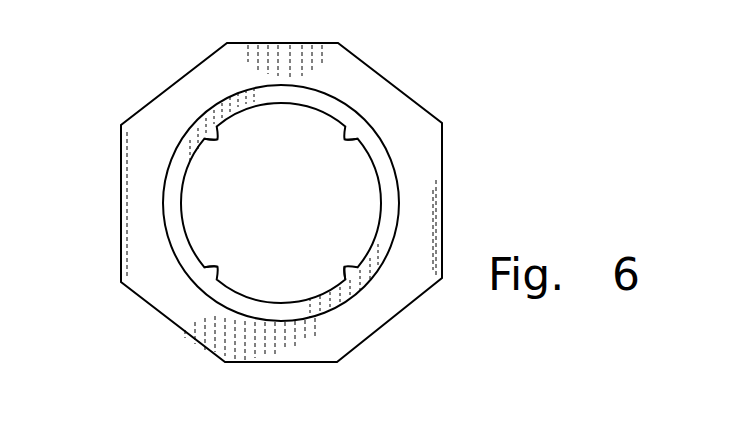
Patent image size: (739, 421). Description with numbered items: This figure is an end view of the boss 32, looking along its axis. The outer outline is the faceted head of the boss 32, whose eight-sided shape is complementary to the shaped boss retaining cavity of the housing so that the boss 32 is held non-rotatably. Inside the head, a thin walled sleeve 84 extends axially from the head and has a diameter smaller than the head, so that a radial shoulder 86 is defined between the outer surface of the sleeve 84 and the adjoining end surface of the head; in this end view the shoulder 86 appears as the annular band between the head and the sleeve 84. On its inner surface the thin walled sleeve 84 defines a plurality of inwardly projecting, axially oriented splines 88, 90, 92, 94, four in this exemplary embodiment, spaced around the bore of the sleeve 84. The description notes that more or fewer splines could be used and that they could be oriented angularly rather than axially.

The boss 32 is at (138, 78).
The thin walled sleeve 84 is at (392, 196).
The radial shoulder 86 is at (418, 122).
The spline 88 is at (218, 136).
The spline 90 is at (345, 138).
The spline 92 is at (344, 271).
The spline 94 is at (214, 266).